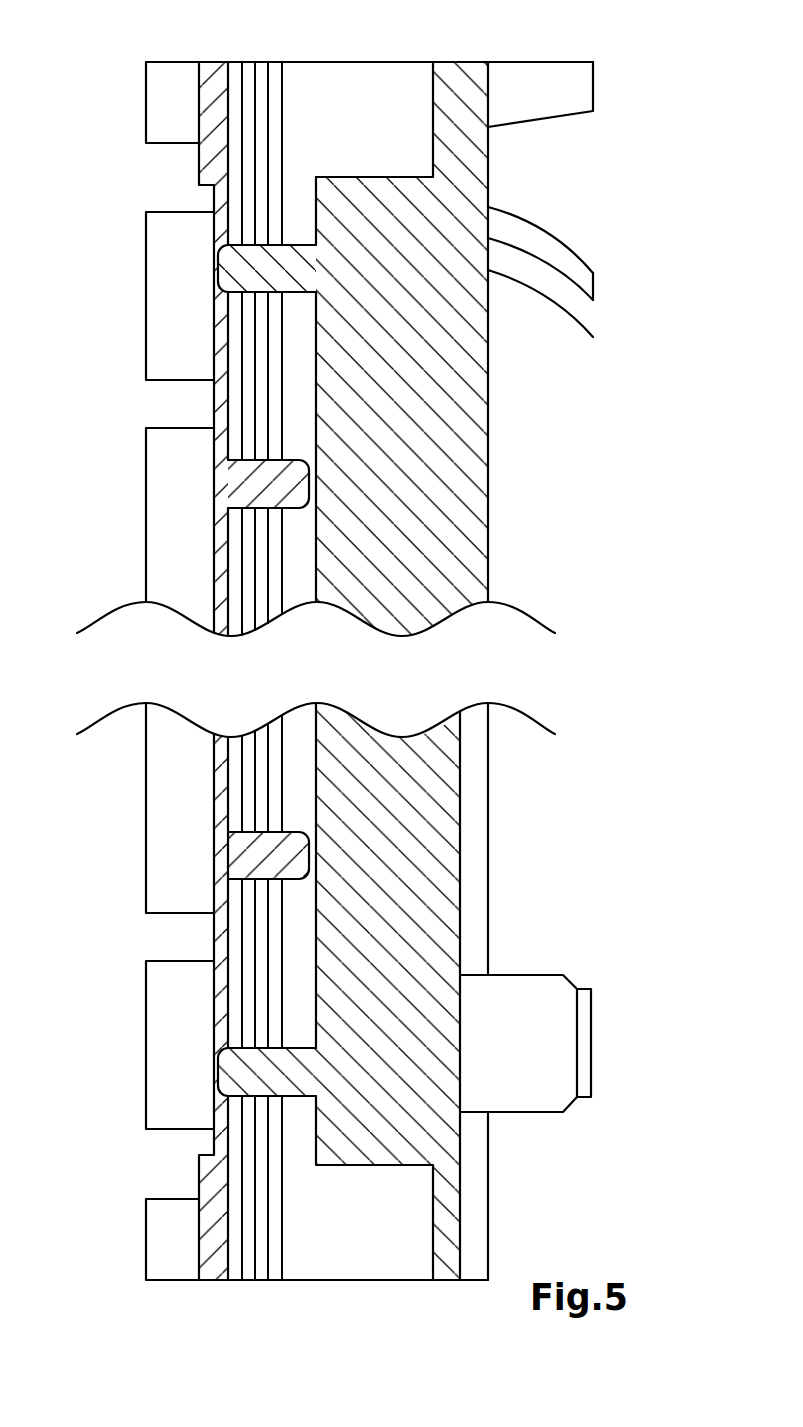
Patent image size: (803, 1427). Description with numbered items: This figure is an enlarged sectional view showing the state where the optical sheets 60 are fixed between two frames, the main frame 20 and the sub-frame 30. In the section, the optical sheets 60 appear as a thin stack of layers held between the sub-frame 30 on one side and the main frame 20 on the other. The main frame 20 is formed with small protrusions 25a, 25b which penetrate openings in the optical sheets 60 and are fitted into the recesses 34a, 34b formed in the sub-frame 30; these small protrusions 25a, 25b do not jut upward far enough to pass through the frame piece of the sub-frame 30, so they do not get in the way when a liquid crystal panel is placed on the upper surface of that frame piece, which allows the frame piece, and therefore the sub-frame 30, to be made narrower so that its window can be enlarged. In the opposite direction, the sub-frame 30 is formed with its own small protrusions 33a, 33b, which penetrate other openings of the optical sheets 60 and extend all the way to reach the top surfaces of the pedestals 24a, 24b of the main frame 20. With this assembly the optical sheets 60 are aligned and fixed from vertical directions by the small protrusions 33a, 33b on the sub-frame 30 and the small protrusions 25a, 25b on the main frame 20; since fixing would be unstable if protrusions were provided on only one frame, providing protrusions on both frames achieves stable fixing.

The main frame 20 is at (463, 523).
The pedestal 24a is at (450, 420).
The pedestal 24b is at (430, 818).
The small protrusion 25a is at (277, 263).
The small protrusion 25b is at (253, 1078).
The sub-frame 30 is at (207, 163).
The small protrusion 33a is at (237, 482).
The small protrusion 33b is at (247, 857).
The recess 34a is at (219, 263).
The recess 34b is at (220, 1067).
The optical sheets 60 is at (282, 50).